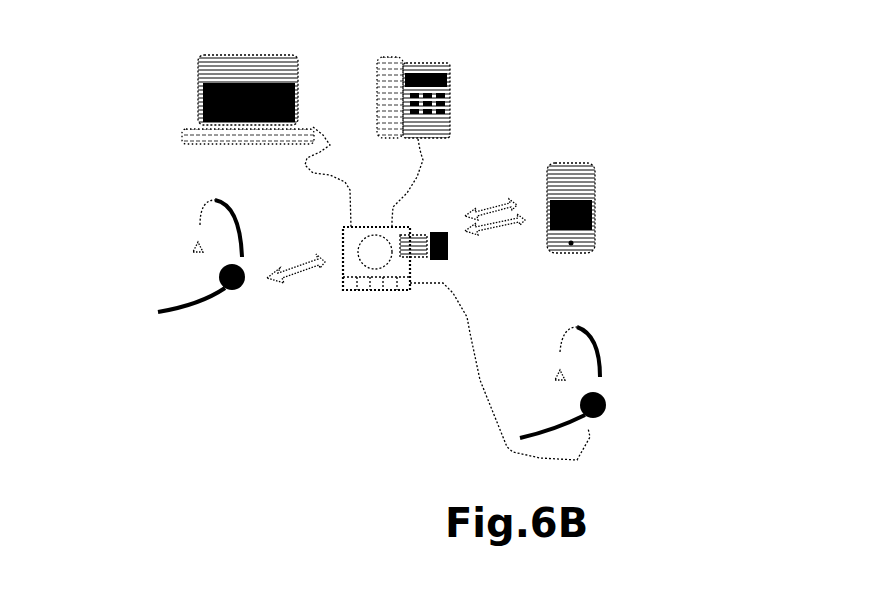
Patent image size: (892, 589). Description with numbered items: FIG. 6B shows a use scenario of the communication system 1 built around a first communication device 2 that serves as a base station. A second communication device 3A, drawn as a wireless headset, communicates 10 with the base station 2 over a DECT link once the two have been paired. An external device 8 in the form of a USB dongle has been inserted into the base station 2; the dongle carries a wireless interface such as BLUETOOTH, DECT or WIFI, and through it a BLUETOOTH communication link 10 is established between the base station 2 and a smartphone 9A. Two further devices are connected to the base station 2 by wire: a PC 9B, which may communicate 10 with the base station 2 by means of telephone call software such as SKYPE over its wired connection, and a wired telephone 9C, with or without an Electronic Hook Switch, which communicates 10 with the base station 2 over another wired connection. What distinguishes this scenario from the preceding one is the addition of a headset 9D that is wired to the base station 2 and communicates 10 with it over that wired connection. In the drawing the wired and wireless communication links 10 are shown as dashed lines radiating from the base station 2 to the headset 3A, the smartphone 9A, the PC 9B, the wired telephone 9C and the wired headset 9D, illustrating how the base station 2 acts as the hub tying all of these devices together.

The communication system 1 is at (112, 18).
The first communication device 2 is at (383, 291).
The second communication device 3A is at (215, 295).
The external device 8 is at (452, 248).
The smartphone 9A is at (598, 195).
The PC 9B is at (298, 63).
The wired telephone 9C is at (452, 83).
The headset 9D is at (597, 373).
The communication link 10 is at (330, 145).